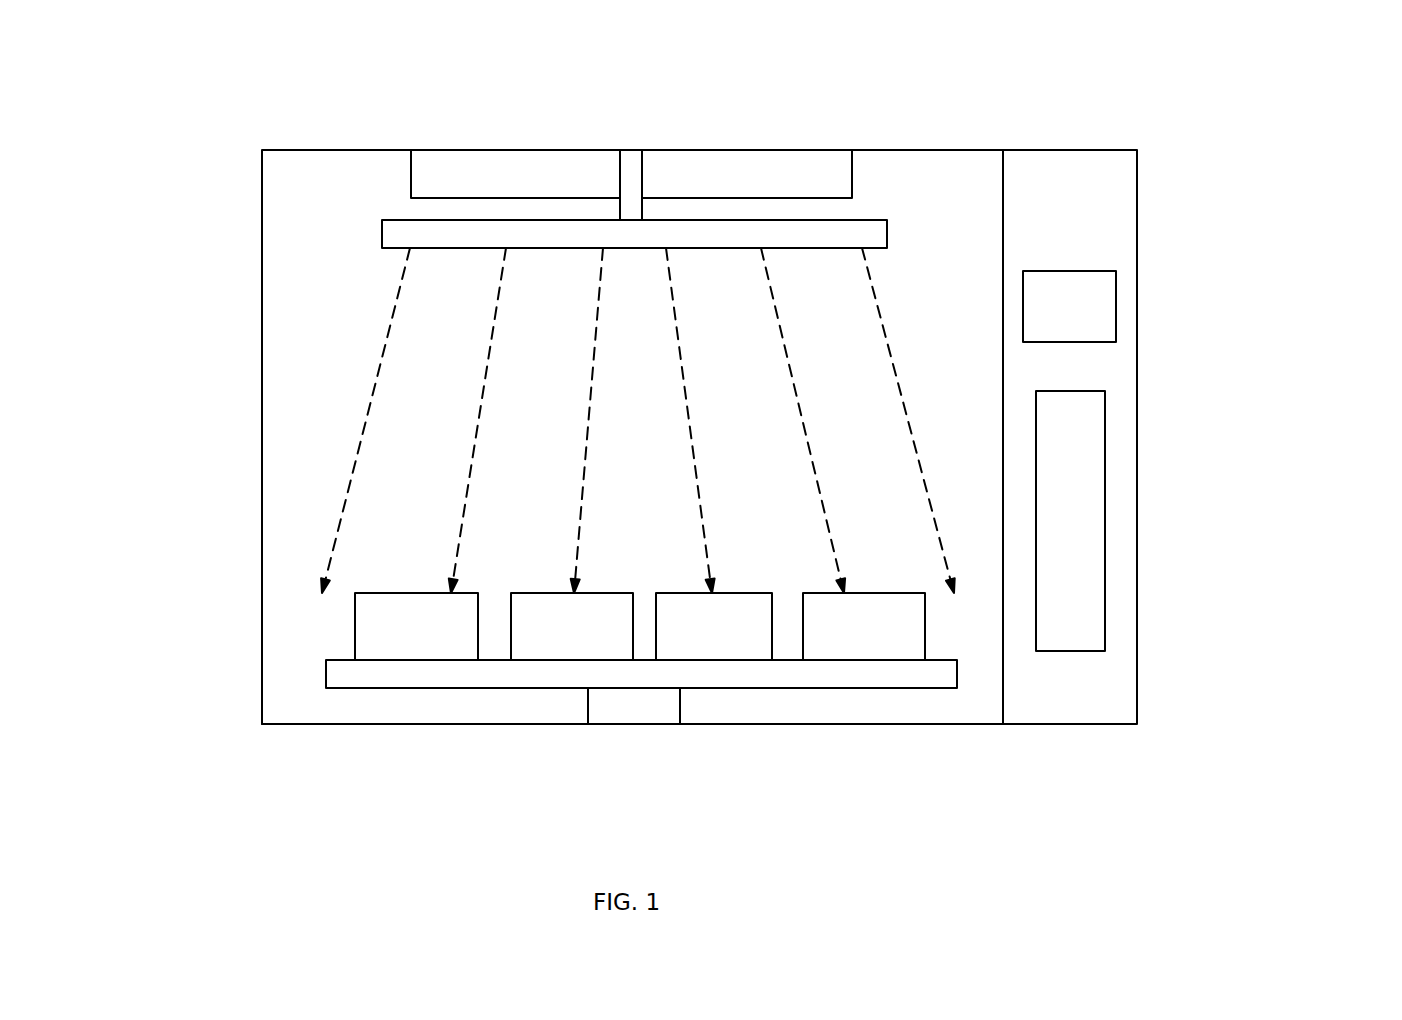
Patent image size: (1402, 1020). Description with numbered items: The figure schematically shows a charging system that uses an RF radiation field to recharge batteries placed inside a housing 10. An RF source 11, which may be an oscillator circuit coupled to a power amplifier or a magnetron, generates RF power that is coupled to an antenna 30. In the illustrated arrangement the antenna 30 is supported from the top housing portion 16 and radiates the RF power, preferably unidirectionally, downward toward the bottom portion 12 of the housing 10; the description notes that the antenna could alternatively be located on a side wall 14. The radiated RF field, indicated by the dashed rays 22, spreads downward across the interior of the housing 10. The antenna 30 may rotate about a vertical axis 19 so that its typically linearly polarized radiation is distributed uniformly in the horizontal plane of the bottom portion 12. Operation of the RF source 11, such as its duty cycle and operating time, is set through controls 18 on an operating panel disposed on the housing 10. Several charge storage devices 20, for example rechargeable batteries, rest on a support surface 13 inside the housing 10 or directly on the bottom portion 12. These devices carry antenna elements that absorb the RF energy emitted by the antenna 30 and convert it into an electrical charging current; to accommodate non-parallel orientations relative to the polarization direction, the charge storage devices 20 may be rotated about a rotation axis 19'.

The housing 10 is at (228, 708).
The RF source 11 is at (513, 150).
The bottom portion 12 is at (798, 724).
The support surface 13 is at (905, 688).
The side wall 14 is at (262, 440).
The top housing portion 16 is at (907, 150).
The controls 18 is at (1116, 303).
The vertical axis 19 is at (604, 135).
The rotation axis 19' is at (663, 749).
The charge storage devices 20 is at (572, 795).
The RF energy rays 22 is at (377, 368).
The antenna 30 is at (393, 220).